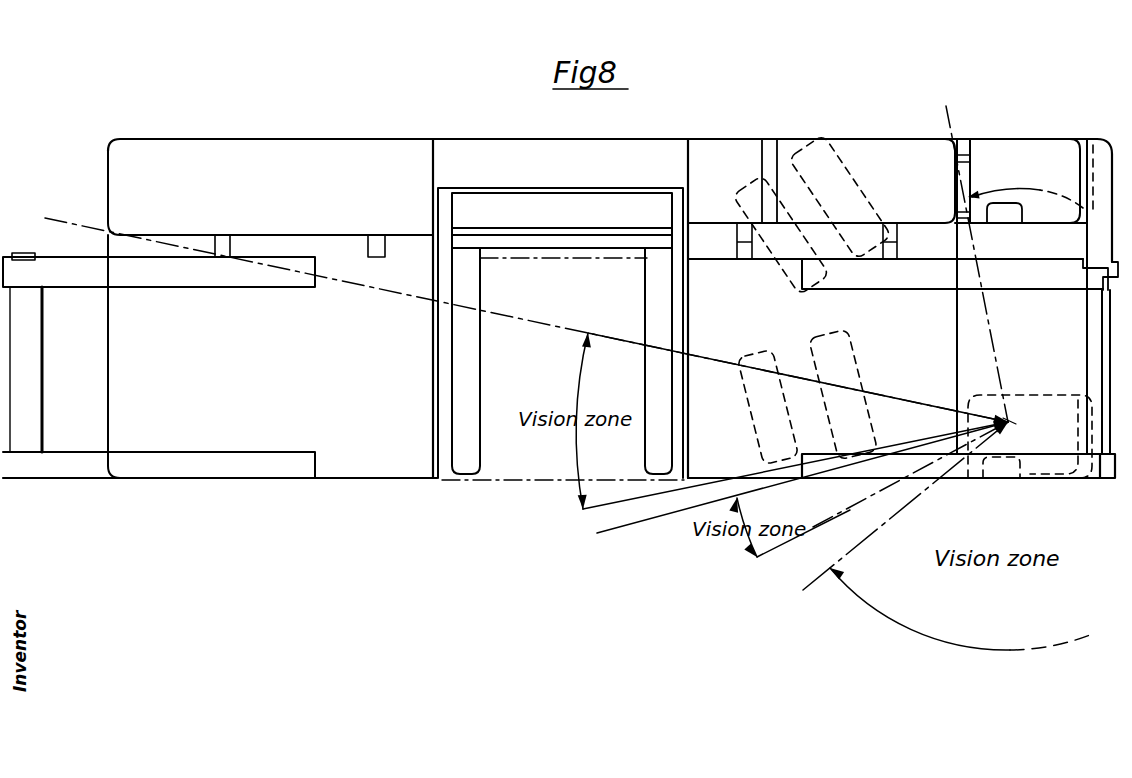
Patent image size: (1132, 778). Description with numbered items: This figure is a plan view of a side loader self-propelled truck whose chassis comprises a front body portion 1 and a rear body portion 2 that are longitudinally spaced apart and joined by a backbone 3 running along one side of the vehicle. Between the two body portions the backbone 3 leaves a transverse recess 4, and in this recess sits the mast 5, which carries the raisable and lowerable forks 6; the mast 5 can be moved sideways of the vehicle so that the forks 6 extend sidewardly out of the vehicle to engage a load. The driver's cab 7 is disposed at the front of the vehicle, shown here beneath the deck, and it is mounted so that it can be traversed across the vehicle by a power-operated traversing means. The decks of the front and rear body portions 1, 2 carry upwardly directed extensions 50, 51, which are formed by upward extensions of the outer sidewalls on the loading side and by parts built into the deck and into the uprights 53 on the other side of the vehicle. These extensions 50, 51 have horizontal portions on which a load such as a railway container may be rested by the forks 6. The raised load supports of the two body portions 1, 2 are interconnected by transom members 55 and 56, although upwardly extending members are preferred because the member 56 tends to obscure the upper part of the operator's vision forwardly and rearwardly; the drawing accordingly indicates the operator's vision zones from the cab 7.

The front body portion 1 is at (901, 306).
The rear body portion 2 is at (220, 308).
The backbone 3 is at (563, 308).
The transverse recess 4 is at (563, 369).
The mast 5 is at (592, 215).
The forks 6 is at (647, 298).
The driver's cab 7 is at (1005, 150).
The upwardly directed extension 50 is at (822, 433).
The upwardly directed extension 51 is at (257, 461).
The uprights 53 is at (223, 248).
The transom member 55 is at (1087, 333).
The transom member 56 is at (32, 391).